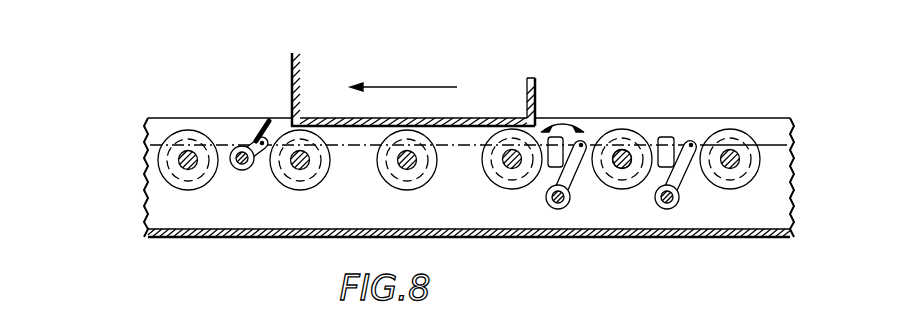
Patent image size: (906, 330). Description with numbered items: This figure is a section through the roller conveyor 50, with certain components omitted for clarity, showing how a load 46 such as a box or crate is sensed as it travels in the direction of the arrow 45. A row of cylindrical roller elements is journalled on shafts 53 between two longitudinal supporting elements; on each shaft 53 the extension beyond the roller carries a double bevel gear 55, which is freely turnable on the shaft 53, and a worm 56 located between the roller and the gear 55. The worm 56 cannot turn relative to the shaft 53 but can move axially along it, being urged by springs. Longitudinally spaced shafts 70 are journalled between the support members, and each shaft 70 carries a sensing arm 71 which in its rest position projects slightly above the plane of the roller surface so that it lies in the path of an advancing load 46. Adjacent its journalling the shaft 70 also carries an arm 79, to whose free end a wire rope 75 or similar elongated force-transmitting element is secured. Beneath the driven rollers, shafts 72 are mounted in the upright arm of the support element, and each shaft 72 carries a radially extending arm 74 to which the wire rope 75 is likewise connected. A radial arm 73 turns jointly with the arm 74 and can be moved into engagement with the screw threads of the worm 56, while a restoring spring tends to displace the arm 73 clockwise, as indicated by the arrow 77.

The arrow 45 is at (397, 85).
The load 46 is at (540, 78).
The roller conveyor 50 is at (465, 69).
The shaft 53 is at (624, 150).
The double bevel gear 55 is at (390, 187).
The worm 56 is at (387, 160).
The shaft 70 is at (234, 173).
The sensing arm 71 is at (257, 133).
The shaft 72 is at (546, 198).
The radial arm 73 is at (555, 135).
The radially extending arm 74 is at (578, 182).
The wire rope 75 is at (762, 145).
The arrow 77 is at (571, 126).
The arm 79 is at (263, 152).